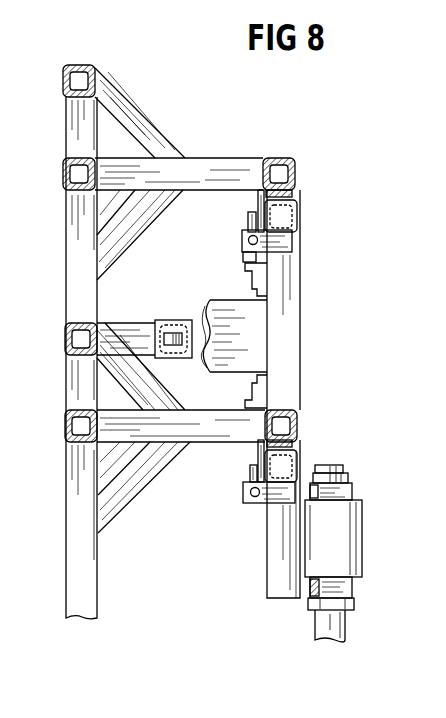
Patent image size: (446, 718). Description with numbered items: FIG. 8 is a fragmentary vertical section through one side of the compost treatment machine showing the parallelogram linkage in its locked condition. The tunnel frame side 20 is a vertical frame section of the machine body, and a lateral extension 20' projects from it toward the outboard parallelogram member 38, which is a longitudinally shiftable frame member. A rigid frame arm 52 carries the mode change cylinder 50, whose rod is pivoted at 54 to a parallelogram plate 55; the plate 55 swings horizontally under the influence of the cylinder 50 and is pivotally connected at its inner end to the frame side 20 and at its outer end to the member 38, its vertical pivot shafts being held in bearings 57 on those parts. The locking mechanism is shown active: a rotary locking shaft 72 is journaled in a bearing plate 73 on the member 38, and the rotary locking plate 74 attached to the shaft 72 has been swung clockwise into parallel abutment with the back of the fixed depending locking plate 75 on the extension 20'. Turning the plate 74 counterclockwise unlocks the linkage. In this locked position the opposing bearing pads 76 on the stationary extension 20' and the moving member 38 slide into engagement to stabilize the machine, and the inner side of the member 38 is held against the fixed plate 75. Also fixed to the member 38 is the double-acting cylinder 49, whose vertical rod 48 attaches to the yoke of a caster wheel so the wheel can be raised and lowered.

The side vertical frame section 20 is at (63, 342).
The lateral extension 20' is at (180, 300).
The rigid frame arm 52 is at (123, 330).
The mode change cylinder 50 is at (175, 322).
The pivot 54 is at (168, 346).
The outboard frame member 38 is at (285, 317).
The bearing pad 76 is at (292, 196).
The bearing plate 73 is at (293, 240).
The fixed depending locking plate 75 is at (258, 195).
The rotary locking plate 74 is at (250, 214).
The rotary locking shaft 72 is at (242, 241).
The bearing 57 is at (248, 284).
The parallelogram plate 55 is at (247, 354).
The cylinder 49 is at (354, 572).
The vertical rod 48 is at (345, 625).